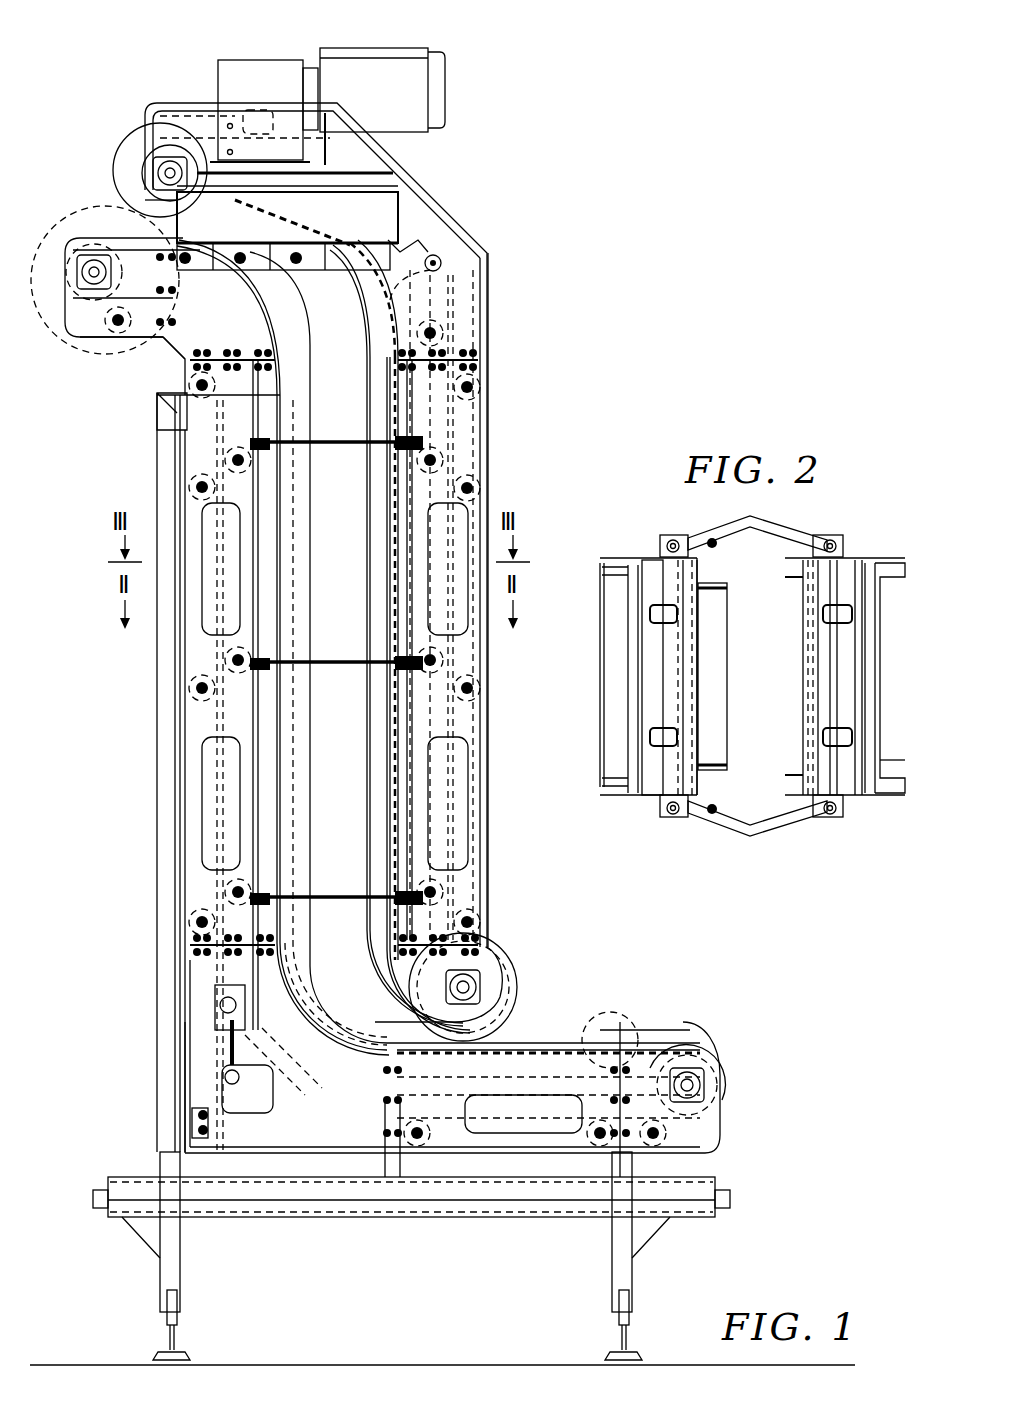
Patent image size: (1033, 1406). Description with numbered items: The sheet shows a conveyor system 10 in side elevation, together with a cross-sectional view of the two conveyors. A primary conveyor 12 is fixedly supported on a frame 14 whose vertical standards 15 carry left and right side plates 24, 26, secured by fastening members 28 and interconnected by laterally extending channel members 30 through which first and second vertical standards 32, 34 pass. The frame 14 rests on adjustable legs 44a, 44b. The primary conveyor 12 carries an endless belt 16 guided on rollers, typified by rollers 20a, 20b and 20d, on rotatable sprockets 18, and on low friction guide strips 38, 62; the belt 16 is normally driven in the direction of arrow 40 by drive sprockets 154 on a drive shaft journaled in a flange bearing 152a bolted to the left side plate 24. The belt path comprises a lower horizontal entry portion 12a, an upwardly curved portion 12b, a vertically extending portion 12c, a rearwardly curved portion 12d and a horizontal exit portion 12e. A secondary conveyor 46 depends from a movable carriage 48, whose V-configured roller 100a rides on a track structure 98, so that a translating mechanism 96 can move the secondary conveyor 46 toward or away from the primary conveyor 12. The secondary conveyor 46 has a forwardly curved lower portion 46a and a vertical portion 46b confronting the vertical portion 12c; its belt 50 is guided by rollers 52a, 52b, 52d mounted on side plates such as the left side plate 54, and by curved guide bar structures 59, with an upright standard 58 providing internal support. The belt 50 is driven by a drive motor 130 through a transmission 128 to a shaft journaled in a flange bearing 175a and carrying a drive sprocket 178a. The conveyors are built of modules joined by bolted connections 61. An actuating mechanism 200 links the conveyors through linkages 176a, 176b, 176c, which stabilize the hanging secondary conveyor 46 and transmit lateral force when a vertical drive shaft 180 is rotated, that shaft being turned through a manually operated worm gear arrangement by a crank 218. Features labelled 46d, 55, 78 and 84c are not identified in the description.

In FIG. 1, the conveyor system 10 is at (598, 156).
In FIG. 1, the primary conveyor 12 is at (156, 760).
In FIG. 2, the primary conveyor 12 is at (644, 520).
In FIG. 1, the lower horizontal entry portion 12a is at (637, 996).
In FIG. 1, the upwardly curved portion 12b is at (305, 1135).
In FIG. 1, the vertically extending portion 12c is at (192, 795).
In FIG. 1, the rearwardly curved portion 12d is at (165, 345).
In FIG. 1, the exit portion 12e is at (110, 338).
In FIG. 1, the frame 14 is at (156, 967).
In FIG. 1, the vertical standards 15 is at (165, 994).
In FIG. 1, the endless belt structure 16 is at (306, 553).
In FIG. 2, the endless belt structure 16 is at (727, 718).
In FIG. 1, the rotatable sprockets 18 is at (720, 1100).
In FIG. 1, the roller 20a is at (190, 688).
In FIG. 1, the roller 20b is at (195, 700).
In FIG. 2, the roller 20b is at (603, 783).
In FIG. 2, the roller 20d is at (600, 570).
In FIG. 1, the left side plate 24 is at (200, 890).
In FIG. 2, the left side plate 24 is at (630, 797).
In FIG. 2, the right side plate 26 is at (628, 555).
In FIG. 1, the fastening members 28 is at (180, 1095).
In FIG. 1, the channel members 30 is at (250, 490).
In FIG. 2, the channel members 30 is at (655, 677).
In FIG. 2, the first vertical standard 32 is at (665, 738).
In FIG. 2, the second vertical standard 34 is at (665, 617).
In FIG. 1, the low friction guide strip 38 is at (282, 333).
In FIG. 1, the arrow 40 is at (792, 1112).
In FIG. 1, the adjustable leg 44a is at (160, 1278).
In FIG. 1, the adjustable leg 44b is at (632, 1278).
In FIG. 1, the secondary conveyor 46 is at (490, 361).
In FIG. 2, the secondary conveyor 46 is at (860, 520).
In FIG. 1, the forwardly curved lower portion 46a is at (490, 950).
In FIG. 1, the vertically extending portion 46b is at (485, 680).
In FIG. 1, the upper portion of side frame 46d is at (445, 248).
In FIG. 1, the movable carriage 48 is at (395, 165).
In FIG. 1, the second conveyor belt 50 is at (372, 606).
In FIG. 2, the second conveyor belt 50 is at (800, 636).
In FIG. 1, the guide roller 52a is at (468, 458).
In FIG. 1, the guide roller 52b is at (472, 481).
In FIG. 2, the guide roller 52b is at (880, 778).
In FIG. 2, the guide roller 52d is at (880, 580).
In FIG. 1, the left side plate 54 is at (475, 882).
In FIG. 2, the left side plate 54 is at (868, 800).
In FIG. 2, the hinge plate 55 is at (868, 557).
In FIG. 1, the upright channel member 58 is at (365, 355).
In FIG. 1, the curved guide bar structures 59 is at (460, 270).
In FIG. 1, the bolted connections 61 is at (380, 1140).
In FIG. 1, the low friction guide strip 62 is at (320, 1003).
In FIG. 1, the cross member 78 is at (655, 1022).
In FIG. 2, the cross member 78 is at (700, 770).
In FIG. 1, the belt guide rail 84c is at (385, 758).
In FIG. 1, the translating mechanism 96 is at (432, 186).
In FIG. 1, the track structure 98 is at (290, 265).
In FIG. 1, the V-configured roller 100a is at (415, 222).
In FIG. 1, the secondary belt drive transmission 128 is at (262, 60).
In FIG. 1, the secondary belt drive motor 130 is at (385, 48).
In FIG. 1, the first flange bearing 152a is at (93, 255).
In FIG. 1, the drive sprockets 154 is at (85, 338).
In FIG. 1, the left flange bearing 175a is at (150, 170).
In FIG. 1, the linkage 176a is at (343, 895).
In FIG. 1, the linkage 176b is at (345, 660).
In FIG. 1, the linkage 176c is at (325, 440).
In FIG. 1, the drive sprocket 178a is at (148, 135).
In FIG. 1, the vertical drive shaft 180 is at (235, 825).
In FIG. 1, the actuating mechanism 200 is at (208, 1014).
In FIG. 1, the crank 218 is at (225, 1052).